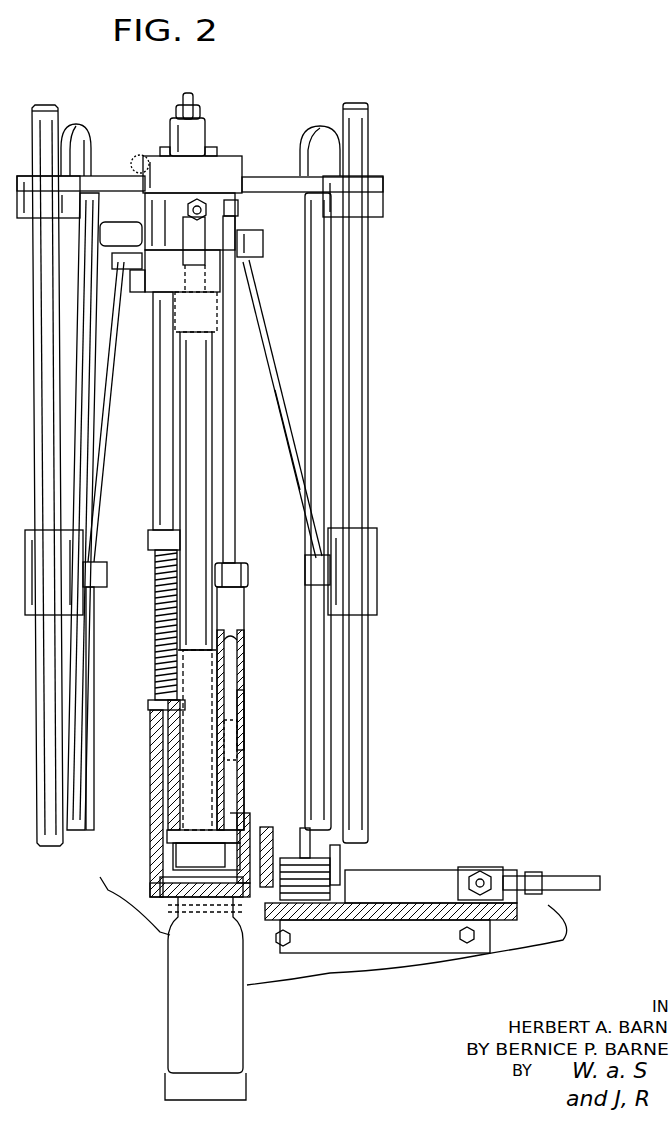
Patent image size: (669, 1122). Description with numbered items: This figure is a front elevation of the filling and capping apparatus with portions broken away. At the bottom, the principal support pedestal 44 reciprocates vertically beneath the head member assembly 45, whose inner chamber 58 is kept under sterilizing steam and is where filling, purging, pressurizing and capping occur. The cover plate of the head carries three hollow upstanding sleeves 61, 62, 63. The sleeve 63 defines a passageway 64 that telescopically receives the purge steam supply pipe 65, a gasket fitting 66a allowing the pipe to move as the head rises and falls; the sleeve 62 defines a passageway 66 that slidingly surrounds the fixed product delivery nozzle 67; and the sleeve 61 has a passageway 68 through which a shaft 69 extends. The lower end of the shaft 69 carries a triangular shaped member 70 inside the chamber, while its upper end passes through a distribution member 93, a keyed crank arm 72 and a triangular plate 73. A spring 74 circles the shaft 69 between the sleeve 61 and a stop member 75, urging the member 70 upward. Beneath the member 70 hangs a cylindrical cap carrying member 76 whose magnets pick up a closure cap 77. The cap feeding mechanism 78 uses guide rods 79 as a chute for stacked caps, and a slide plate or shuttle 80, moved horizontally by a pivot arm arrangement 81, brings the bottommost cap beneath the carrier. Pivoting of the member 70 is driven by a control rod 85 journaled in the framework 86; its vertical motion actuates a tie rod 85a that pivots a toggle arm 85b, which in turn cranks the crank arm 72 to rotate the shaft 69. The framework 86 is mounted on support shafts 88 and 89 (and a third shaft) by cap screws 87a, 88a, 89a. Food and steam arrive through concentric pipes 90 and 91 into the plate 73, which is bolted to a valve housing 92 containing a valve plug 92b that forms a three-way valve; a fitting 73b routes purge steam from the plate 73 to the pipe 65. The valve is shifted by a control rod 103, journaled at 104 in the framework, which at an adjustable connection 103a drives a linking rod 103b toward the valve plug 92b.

The principal support pedestal 44 is at (212, 1095).
The head member assembly 45 is at (128, 838).
The inner chamber 58 is at (165, 872).
The sleeve 61 is at (152, 802).
The sleeve 62 is at (206, 698).
The sleeve 63 is at (246, 704).
The passageway 64 is at (237, 731).
The purge steam supply pipe 65 is at (235, 541).
The passageway 66 is at (245, 682).
The gasket fitting 66a is at (249, 575).
The product delivery nozzle 67 is at (206, 415).
The passageway 68 is at (164, 716).
The shaft 69 is at (158, 407).
The triangular shaped member 70 is at (205, 832).
The crank arm 72 is at (171, 251).
The triangular plate 73 is at (196, 191).
The fitting 73b is at (240, 208).
The spring 74 is at (157, 622).
The stop member 75 is at (156, 534).
The cap carrying member 76 is at (212, 865).
The closure cap 77 is at (341, 877).
The cap feeding mechanism 78 is at (466, 838).
The guide rods 79 is at (341, 852).
The slide plate or shuttle 80 is at (385, 920).
The pivot arm arrangement 81 is at (511, 870).
The control rod 85 is at (61, 674).
The tie rod 85a is at (109, 368).
The toggle arm 85b is at (102, 236).
The framework 86 is at (262, 180).
The cap screw 87a is at (207, 141).
The support shaft 88 is at (89, 402).
The cap screw 88a is at (78, 142).
The support shaft 89 is at (334, 404).
The cap screw 89a is at (305, 162).
The pipe 90 is at (188, 96).
The inlet food conduit 91 is at (200, 110).
The valve housing 92 is at (258, 320).
The valve plug 92b is at (252, 270).
The distribution member 93 is at (152, 296).
The control rod 103 is at (363, 432).
The adjustable connection 103a is at (372, 585).
The linking rod 103b is at (293, 452).
The journal mounting 104 is at (363, 177).